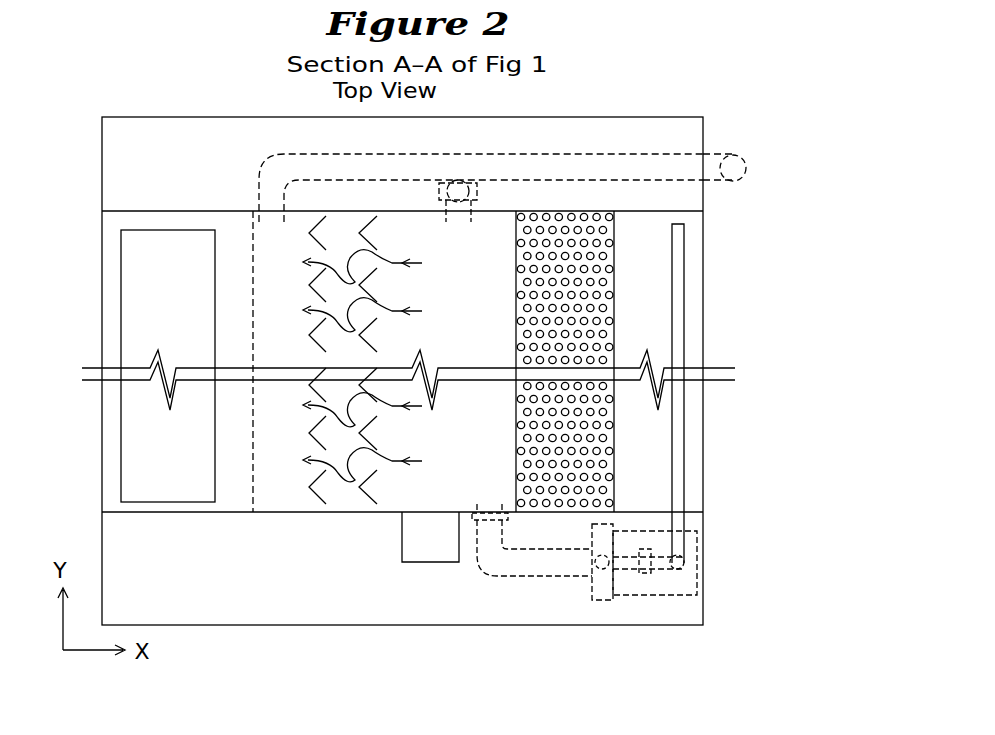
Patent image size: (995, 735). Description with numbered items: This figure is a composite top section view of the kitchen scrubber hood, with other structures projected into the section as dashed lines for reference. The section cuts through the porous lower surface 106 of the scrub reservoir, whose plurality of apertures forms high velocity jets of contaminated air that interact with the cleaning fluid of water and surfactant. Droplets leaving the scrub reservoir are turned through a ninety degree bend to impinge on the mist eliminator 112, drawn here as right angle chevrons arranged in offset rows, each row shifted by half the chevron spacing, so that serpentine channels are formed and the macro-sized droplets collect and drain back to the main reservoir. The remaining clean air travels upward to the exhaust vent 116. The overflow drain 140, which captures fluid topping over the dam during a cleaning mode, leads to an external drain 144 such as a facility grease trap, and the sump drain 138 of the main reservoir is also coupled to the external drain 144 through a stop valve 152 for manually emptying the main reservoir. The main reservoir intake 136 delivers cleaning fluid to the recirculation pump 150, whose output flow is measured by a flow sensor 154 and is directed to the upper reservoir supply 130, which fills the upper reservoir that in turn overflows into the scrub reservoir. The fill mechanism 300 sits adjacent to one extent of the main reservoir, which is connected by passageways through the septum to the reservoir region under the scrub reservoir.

The lower surface of scrub reservoir 106 is at (580, 211).
The mist eliminator 112 is at (322, 478).
The exhaust vent 116 is at (152, 237).
The upper reservoir supply 130 is at (678, 270).
The intake 136 is at (488, 504).
The sump drain 138 is at (452, 228).
The overflow drain 140 is at (270, 222).
The external drain 144 is at (746, 161).
The recirculation pump 150 is at (591, 586).
The stop valve 152 is at (453, 183).
The flow sensor 154 is at (646, 574).
The fill mechanism 300 is at (402, 563).